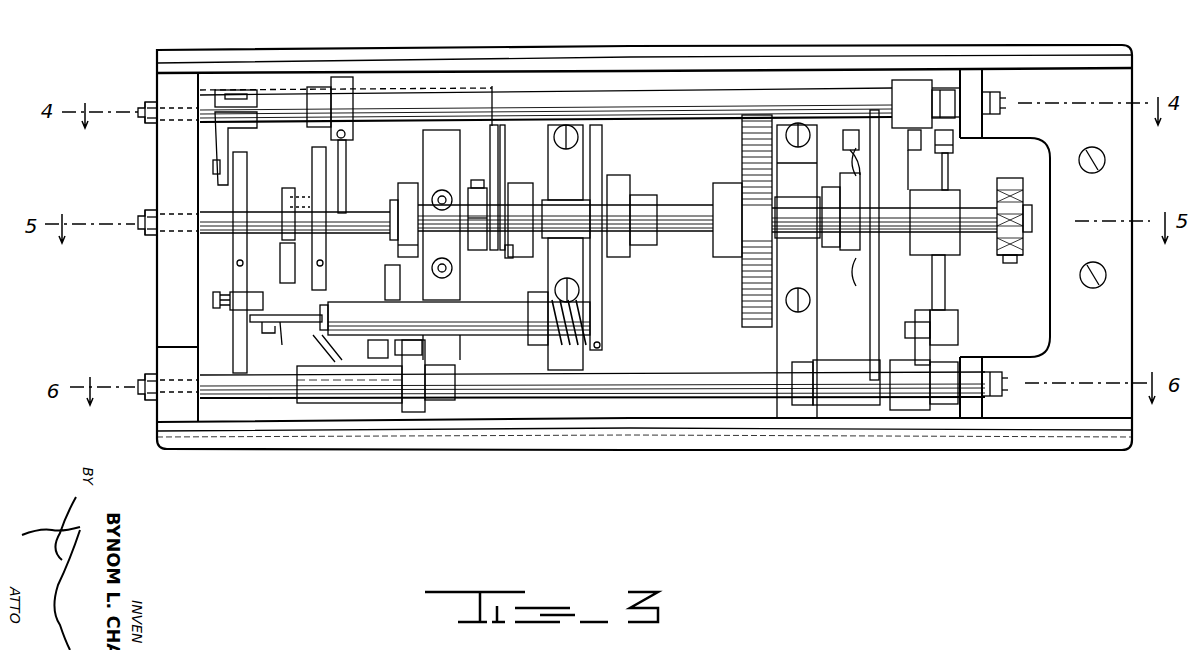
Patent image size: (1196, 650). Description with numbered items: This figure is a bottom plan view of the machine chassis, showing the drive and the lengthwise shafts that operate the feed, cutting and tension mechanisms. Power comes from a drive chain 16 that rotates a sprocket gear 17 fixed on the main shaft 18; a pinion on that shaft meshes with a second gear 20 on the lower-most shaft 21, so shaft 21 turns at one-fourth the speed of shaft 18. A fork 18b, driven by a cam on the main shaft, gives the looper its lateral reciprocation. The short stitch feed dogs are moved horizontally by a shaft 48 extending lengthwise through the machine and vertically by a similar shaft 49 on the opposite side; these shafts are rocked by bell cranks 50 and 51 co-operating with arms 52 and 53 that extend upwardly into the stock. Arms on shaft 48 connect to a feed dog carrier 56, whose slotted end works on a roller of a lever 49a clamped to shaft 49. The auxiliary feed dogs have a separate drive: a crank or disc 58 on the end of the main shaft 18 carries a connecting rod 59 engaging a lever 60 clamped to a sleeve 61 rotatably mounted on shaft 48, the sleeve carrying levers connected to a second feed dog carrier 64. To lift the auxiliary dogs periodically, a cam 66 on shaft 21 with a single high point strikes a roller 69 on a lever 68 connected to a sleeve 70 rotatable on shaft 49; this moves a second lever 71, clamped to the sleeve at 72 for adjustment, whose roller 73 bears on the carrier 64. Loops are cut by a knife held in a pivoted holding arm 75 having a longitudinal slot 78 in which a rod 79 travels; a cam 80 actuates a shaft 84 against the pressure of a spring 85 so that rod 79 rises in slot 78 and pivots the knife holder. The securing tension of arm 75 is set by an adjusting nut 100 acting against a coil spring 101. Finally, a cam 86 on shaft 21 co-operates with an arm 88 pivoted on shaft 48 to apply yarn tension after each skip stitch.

The drive chain 16 is at (1010, 256).
The sprocket gear 17 is at (1018, 192).
The main shaft 18 is at (1032, 212).
The fork 18b is at (476, 240).
The gear 20 is at (745, 160).
The shaft 21 is at (682, 232).
The shaft 48 is at (270, 388).
The shaft 49 is at (290, 97).
The lever 49a is at (205, 147).
The bell crank 50 is at (954, 143).
The bell crank 51 is at (958, 314).
The arm 52 is at (950, 176).
The arm 53 is at (946, 272).
The feed dog carrier 56 is at (236, 197).
The crank or disc 58 is at (402, 188).
The connecting rod 59 is at (388, 279).
The lever 60 is at (403, 330).
The sleeve 61 is at (385, 390).
The feed dog carrier 64 is at (314, 164).
The cam 66 is at (522, 192).
The lever 68 is at (492, 164).
The roller 69 is at (510, 252).
The sleeve 70 is at (426, 92).
The lever 71 is at (346, 153).
The clamp 72 is at (335, 135).
The roller 73 is at (305, 198).
The holding arm 75 is at (267, 330).
The longitudinal slot 78 is at (282, 313).
The rod 79 is at (282, 332).
The cam 80 is at (626, 188).
The shaft 84 is at (318, 340).
The spring 85 is at (603, 277).
The cam 86 is at (848, 250).
The arm 88 is at (868, 322).
The adjusting nut 100 is at (211, 298).
The coil spring 101 is at (234, 288).